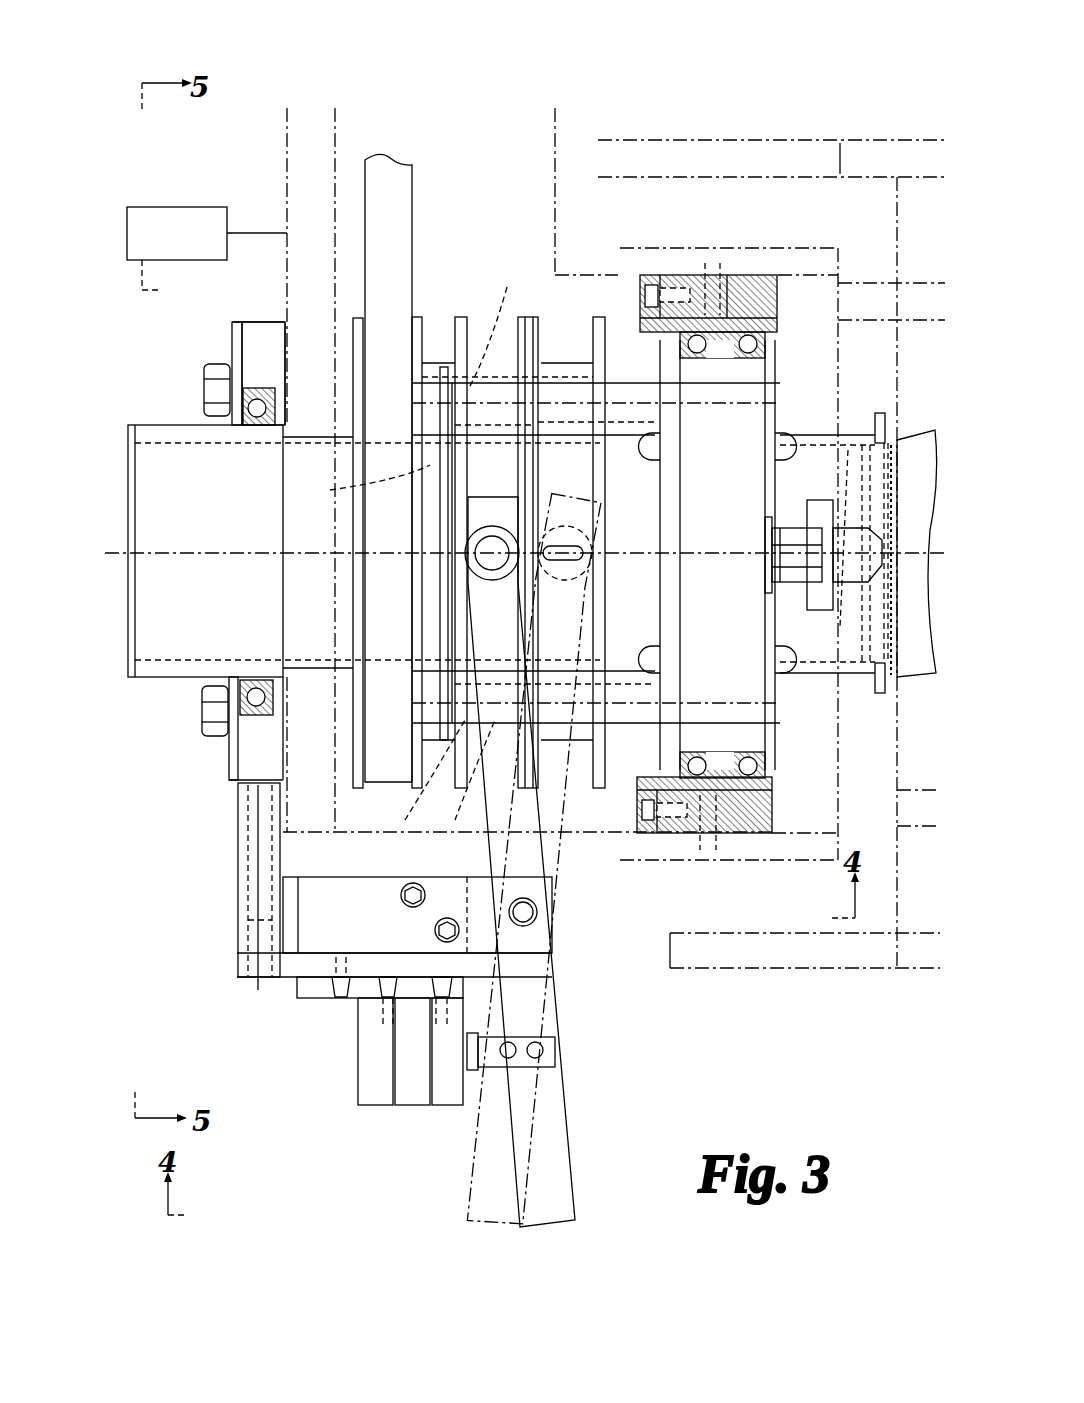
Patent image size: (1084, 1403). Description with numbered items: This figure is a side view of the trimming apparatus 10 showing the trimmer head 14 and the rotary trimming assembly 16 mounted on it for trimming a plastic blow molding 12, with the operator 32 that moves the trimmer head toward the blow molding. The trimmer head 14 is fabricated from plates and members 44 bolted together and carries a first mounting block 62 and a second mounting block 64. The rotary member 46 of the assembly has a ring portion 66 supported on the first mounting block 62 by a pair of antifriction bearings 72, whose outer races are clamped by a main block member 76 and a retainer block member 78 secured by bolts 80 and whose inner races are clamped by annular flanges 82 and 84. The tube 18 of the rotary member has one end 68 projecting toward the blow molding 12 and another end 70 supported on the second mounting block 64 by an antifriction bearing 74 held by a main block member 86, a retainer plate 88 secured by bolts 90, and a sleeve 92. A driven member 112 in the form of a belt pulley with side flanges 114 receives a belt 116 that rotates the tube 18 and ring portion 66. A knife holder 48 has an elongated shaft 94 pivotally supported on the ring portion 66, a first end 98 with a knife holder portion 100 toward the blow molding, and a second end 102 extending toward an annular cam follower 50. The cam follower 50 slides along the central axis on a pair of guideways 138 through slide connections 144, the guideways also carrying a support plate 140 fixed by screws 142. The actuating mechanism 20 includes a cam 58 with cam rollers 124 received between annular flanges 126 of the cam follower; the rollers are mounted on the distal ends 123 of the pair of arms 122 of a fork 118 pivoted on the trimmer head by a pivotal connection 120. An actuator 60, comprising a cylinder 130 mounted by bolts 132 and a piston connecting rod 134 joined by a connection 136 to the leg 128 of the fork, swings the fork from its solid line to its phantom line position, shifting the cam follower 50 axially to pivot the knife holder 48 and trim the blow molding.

The apparatus 10 is at (505, 107).
The plastic blow molding 12 is at (920, 430).
The trimmer head 14 is at (236, 975).
The rotary trimming assembly 16 is at (808, 113).
The tube 18 is at (440, 388).
The actuating mechanism 20 is at (352, 1102).
The operator 32 is at (190, 207).
The plates and members 44 is at (238, 940).
The rotary member 46 is at (640, 378).
The knife holder 48 is at (785, 523).
The annular cam follower 50 is at (485, 327).
The cam 58 is at (468, 541).
The actuator 60 is at (411, 1106).
The first mounting block 62 is at (771, 276).
The second mounting block 64 is at (260, 322).
The ring portion 66 is at (786, 348).
The one end of tube 68 is at (850, 650).
The another end of tube 70 is at (290, 672).
The pair of antifriction bearings 72 is at (712, 300).
The antifriction bearing 74 is at (262, 390).
The main block member 76 is at (760, 300).
The retainer block member 78 is at (643, 315).
The bolts 80 is at (665, 300).
The annular flange 82 is at (776, 368).
The annular flange 84 is at (698, 383).
The main block member 86 is at (272, 345).
The retainer plate 88 is at (232, 345).
The bolts 90 is at (208, 372).
The sleeve 92 is at (283, 425).
The elongated shaft 94 is at (768, 590).
The first end 98 is at (837, 582).
The knife holder portion 100 is at (856, 535).
The second end 102 is at (680, 512).
The driven member 112 is at (318, 877).
The side flanges 114 is at (375, 765).
The belt 116 is at (380, 715).
The fork 118 is at (560, 1010).
The pivotal connection 120 is at (540, 915).
The pair of arms 122 is at (440, 640).
The distal ends 123 is at (440, 592).
The cam rollers 124 is at (575, 545).
The annular flanges 126 is at (480, 525).
The leg 128 is at (555, 1145).
The cylinder 130 is at (393, 1108).
The bolts 132 is at (388, 975).
The piston connecting rod 134 is at (495, 1068).
The connection 136 is at (543, 1053).
The guideways 138 is at (580, 383).
The support plate 140 is at (450, 450).
The screws 142 is at (456, 542).
The slide connection 144 is at (391, 649).